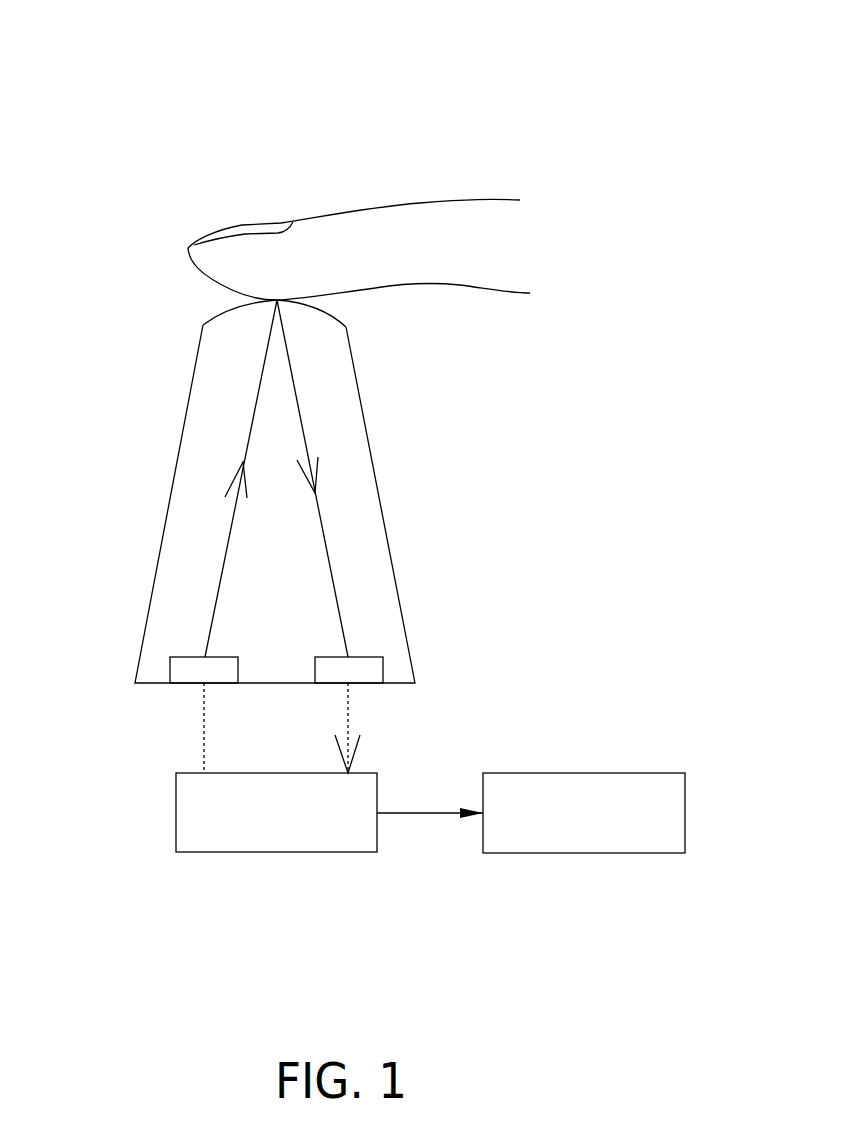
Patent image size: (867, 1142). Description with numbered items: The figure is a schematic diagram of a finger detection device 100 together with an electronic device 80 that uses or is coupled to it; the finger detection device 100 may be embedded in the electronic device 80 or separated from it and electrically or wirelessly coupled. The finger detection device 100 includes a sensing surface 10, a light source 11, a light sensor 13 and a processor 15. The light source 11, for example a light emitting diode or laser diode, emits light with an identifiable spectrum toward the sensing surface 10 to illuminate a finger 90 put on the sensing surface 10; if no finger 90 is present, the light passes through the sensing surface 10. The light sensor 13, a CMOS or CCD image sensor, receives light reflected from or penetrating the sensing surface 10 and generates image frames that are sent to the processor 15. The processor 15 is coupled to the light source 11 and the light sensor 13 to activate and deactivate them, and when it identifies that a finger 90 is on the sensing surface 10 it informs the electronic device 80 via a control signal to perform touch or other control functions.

The finger detection device 100 is at (110, 41).
The finger 90 is at (281, 223).
The sensing surface 10 is at (223, 312).
The light source 11 is at (188, 663).
The light sensor 13 is at (370, 663).
The processor 15 is at (176, 808).
The electronic device 80 is at (647, 773).